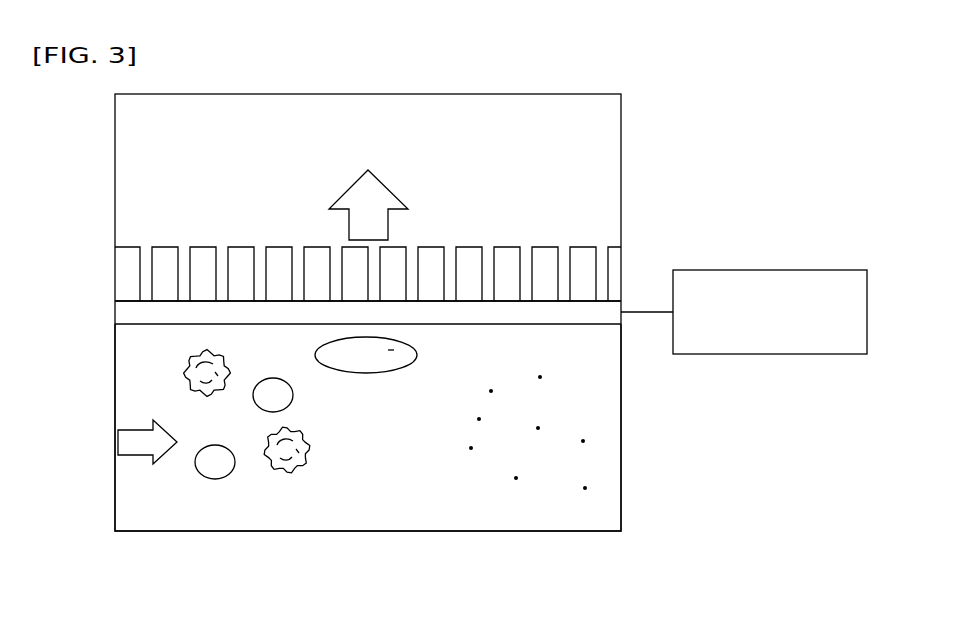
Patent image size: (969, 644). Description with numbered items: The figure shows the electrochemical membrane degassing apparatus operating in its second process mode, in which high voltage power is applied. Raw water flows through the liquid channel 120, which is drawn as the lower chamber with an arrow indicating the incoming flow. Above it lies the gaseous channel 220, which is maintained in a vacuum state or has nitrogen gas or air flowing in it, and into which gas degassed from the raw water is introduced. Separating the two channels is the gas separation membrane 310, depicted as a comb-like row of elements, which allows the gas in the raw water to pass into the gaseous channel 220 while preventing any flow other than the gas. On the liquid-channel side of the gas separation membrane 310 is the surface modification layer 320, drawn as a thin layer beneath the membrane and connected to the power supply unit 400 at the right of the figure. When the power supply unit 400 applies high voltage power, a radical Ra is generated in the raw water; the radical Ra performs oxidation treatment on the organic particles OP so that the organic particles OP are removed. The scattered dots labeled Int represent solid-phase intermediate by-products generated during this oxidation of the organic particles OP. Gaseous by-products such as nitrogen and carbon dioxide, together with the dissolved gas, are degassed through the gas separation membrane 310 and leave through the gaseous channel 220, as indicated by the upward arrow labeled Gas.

The gaseous channel 220 is at (156, 150).
The gas separation membrane 310 is at (125, 273).
The surface modification layer 320 is at (137, 313).
The liquid channel 120 is at (135, 367).
The power supply unit 400 is at (760, 270).
The gas Gas is at (368, 190).
The organic particles OP is at (208, 479).
The radical Ra is at (366, 373).
The intermediate by-products Int is at (583, 441).